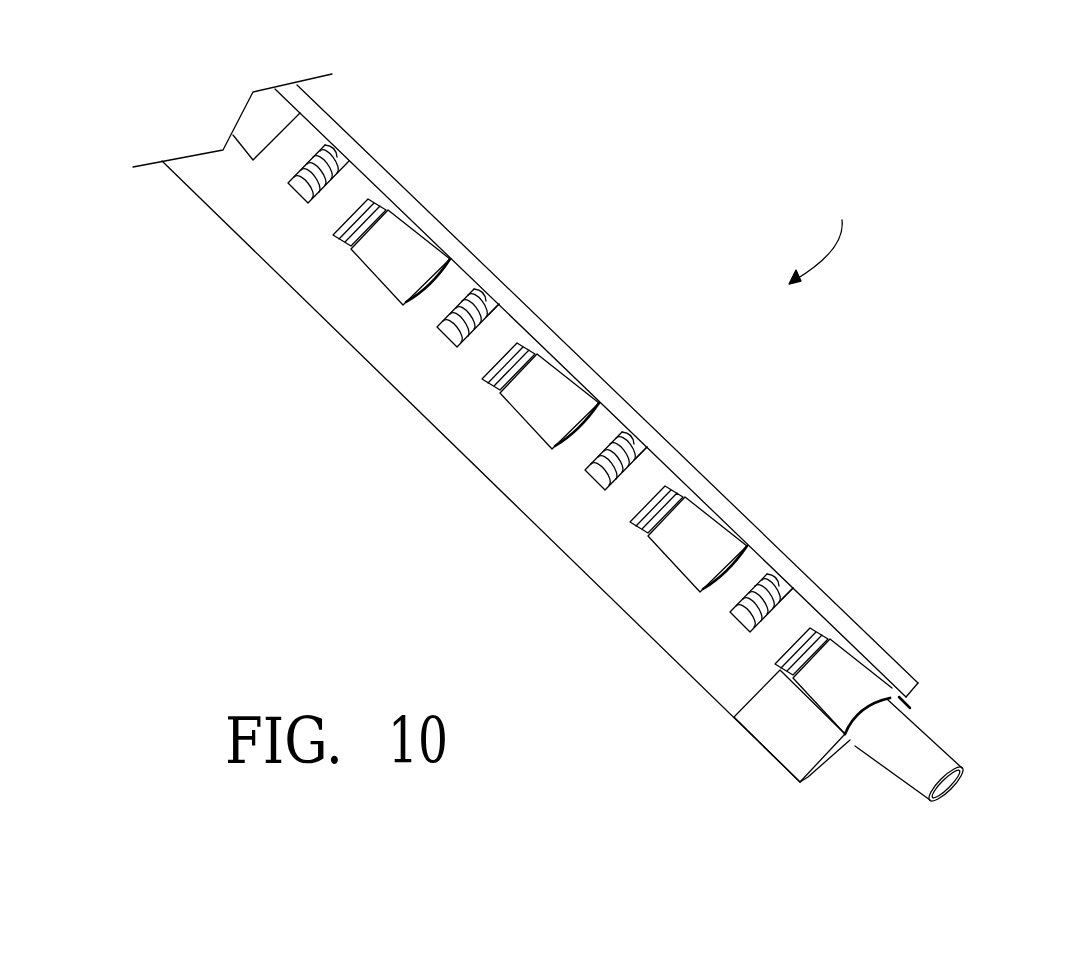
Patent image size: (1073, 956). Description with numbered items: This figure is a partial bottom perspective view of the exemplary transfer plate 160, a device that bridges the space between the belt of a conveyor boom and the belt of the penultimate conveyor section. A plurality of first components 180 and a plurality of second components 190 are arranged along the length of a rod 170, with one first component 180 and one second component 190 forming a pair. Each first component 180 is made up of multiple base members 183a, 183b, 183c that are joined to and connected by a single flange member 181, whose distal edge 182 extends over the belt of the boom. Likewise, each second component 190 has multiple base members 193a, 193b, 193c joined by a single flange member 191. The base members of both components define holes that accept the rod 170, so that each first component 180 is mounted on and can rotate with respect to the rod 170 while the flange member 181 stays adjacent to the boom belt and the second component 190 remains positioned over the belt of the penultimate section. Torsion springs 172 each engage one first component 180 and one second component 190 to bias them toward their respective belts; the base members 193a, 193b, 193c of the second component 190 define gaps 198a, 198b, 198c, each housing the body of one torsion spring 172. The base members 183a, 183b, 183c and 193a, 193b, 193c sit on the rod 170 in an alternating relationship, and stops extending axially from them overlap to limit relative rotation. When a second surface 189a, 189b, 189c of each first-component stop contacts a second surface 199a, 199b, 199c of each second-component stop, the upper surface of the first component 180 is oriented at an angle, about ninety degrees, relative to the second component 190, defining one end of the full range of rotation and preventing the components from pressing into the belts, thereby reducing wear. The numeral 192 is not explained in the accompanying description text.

The transfer plate 160 is at (827, 236).
The rod 170 is at (948, 792).
The torsion spring 172 is at (318, 158).
The first component 180 is at (385, 167).
The flange member 181 is at (912, 708).
The distal edge 182 is at (908, 672).
The base member 183a is at (855, 676).
The base member 183b is at (707, 540).
The base member 183c is at (555, 393).
The second surface 189a is at (782, 668).
The second surface 189b is at (632, 520).
The second surface 189c is at (485, 380).
The second component 190 is at (258, 254).
The flange member 191 is at (810, 778).
The plate end face 192 is at (782, 766).
The base member 193a is at (793, 620).
The base member 193b is at (648, 478).
The base member 193c is at (497, 338).
The gap 198a is at (735, 616).
The gap 198b is at (588, 472).
The gap 198c is at (447, 327).
The second surface 199a is at (825, 632).
The second surface 199b is at (677, 482).
The second surface 199c is at (527, 347).